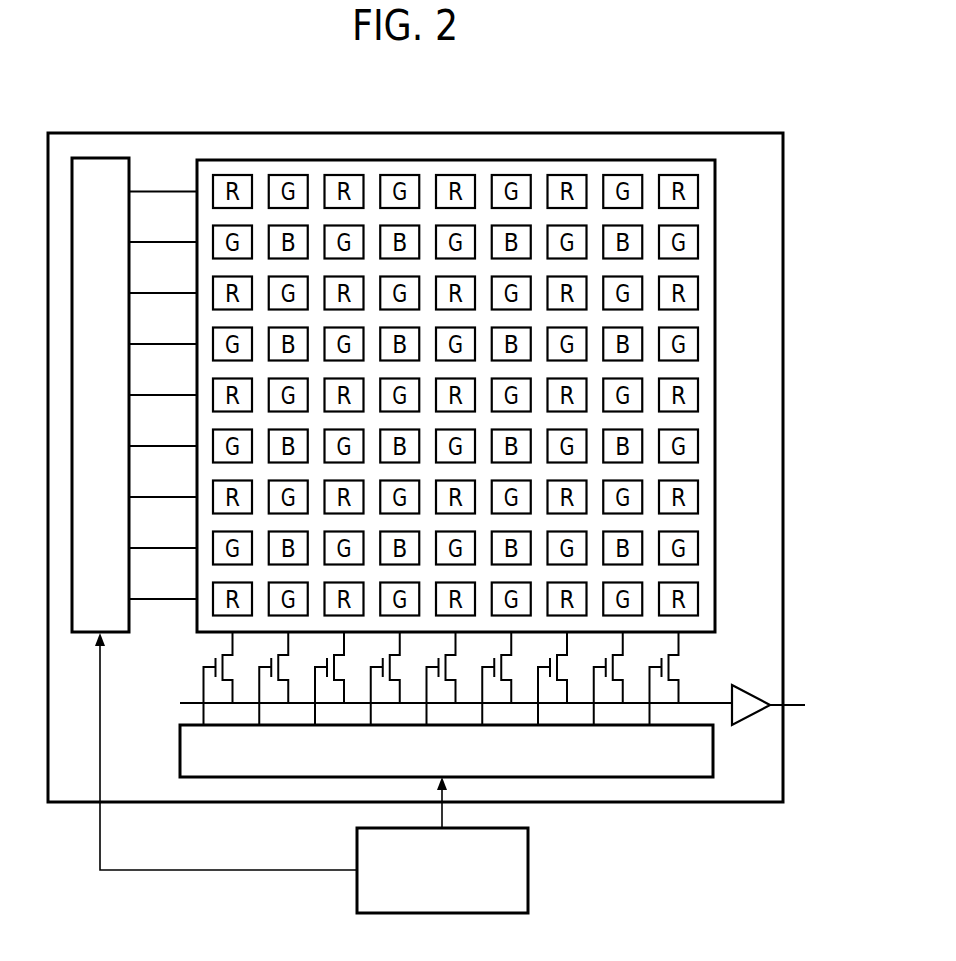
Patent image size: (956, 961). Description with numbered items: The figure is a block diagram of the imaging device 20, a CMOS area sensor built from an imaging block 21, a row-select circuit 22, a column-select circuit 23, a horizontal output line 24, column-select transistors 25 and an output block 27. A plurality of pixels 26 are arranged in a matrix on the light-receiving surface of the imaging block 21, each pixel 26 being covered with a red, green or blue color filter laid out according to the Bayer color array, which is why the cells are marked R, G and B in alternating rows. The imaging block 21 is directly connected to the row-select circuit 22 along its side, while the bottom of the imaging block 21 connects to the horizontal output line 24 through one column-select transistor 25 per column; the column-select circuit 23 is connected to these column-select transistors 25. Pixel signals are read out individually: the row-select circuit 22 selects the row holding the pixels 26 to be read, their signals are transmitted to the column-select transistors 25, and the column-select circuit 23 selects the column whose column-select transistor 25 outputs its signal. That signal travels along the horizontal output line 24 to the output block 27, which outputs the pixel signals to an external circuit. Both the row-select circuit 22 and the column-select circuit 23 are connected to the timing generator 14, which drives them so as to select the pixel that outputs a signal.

The timing generator 14 is at (530, 868).
The imaging device 20 is at (783, 318).
The imaging block 21 is at (521, 355).
The row-select circuit 22 is at (100, 158).
The column-select circuit 23 is at (180, 750).
The horizontal output line 24 is at (718, 707).
The column-select transistor 25 is at (682, 662).
The pixel 26 is at (344, 175).
The output block 27 is at (752, 695).